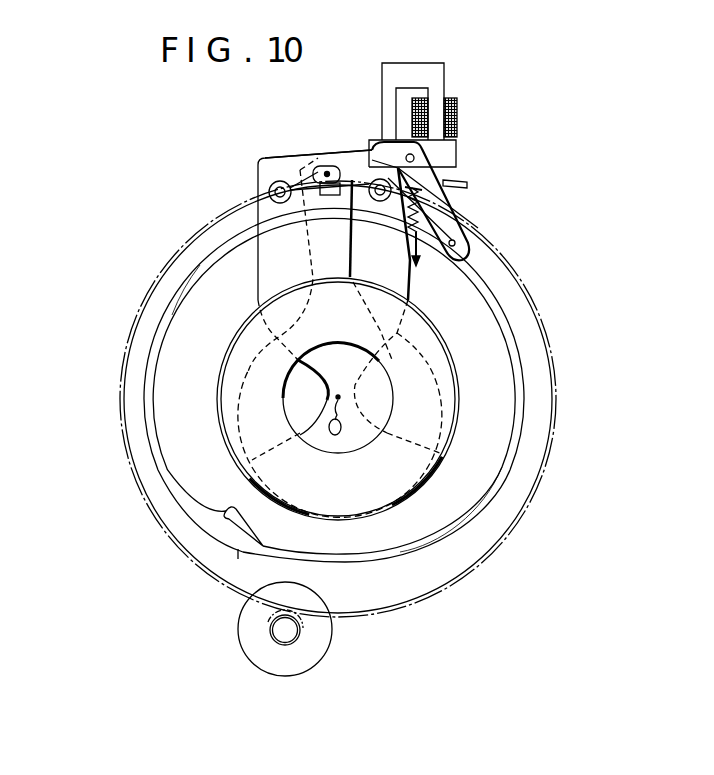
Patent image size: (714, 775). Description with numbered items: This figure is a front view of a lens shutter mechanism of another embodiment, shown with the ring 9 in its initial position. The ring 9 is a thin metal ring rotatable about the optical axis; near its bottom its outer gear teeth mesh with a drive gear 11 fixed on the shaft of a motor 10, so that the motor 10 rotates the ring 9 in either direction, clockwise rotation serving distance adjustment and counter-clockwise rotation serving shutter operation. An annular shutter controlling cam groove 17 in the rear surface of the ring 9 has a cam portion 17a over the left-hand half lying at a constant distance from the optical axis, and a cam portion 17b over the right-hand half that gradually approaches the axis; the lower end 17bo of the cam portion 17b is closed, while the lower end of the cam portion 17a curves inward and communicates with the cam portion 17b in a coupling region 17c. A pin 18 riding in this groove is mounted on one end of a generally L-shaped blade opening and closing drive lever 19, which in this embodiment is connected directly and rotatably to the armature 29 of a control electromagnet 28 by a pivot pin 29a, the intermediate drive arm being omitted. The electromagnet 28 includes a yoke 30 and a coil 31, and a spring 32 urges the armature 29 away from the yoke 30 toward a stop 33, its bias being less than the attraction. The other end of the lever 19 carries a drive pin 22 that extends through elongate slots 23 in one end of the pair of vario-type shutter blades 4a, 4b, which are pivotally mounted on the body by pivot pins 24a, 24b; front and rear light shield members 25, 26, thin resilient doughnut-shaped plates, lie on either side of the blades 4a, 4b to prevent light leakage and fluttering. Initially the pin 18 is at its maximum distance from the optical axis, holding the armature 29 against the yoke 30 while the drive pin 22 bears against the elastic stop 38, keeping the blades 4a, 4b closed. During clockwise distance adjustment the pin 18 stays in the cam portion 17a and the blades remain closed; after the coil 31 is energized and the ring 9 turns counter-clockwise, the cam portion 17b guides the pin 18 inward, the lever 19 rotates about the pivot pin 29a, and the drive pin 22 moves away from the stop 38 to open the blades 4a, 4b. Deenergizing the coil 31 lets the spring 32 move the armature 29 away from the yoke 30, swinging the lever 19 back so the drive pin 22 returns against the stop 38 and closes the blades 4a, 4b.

The ring 9 is at (534, 432).
The motor 10 is at (254, 640).
The drive gear 11 is at (305, 638).
The shutter controlling cam groove 17 is at (531, 332).
The cam portion 17a is at (172, 315).
The cam portion 17b is at (504, 464).
The lower end of cam portion 17b 17bo is at (234, 512).
The coupling region 17c is at (243, 567).
The pin 18 is at (430, 254).
The blade opening and closing drive lever 19 is at (446, 169).
The drive pin 22 is at (333, 167).
The elongate slots 23 is at (324, 171).
The pivot pin 24a is at (270, 189).
The pivot pin 24b is at (380, 203).
The front light shield member 25 is at (428, 330).
The rear light shield member 26 is at (368, 421).
The control electromagnet 28 is at (456, 76).
The armature 29 is at (456, 149).
The pivot pin 29a is at (406, 153).
The yoke 30 is at (402, 72).
The coil 31 is at (458, 112).
The spring 32 is at (412, 230).
The stop 33 is at (461, 187).
The stop 38 is at (331, 197).
The shutter blade 4a is at (262, 268).
The shutter blade 4b is at (409, 279).